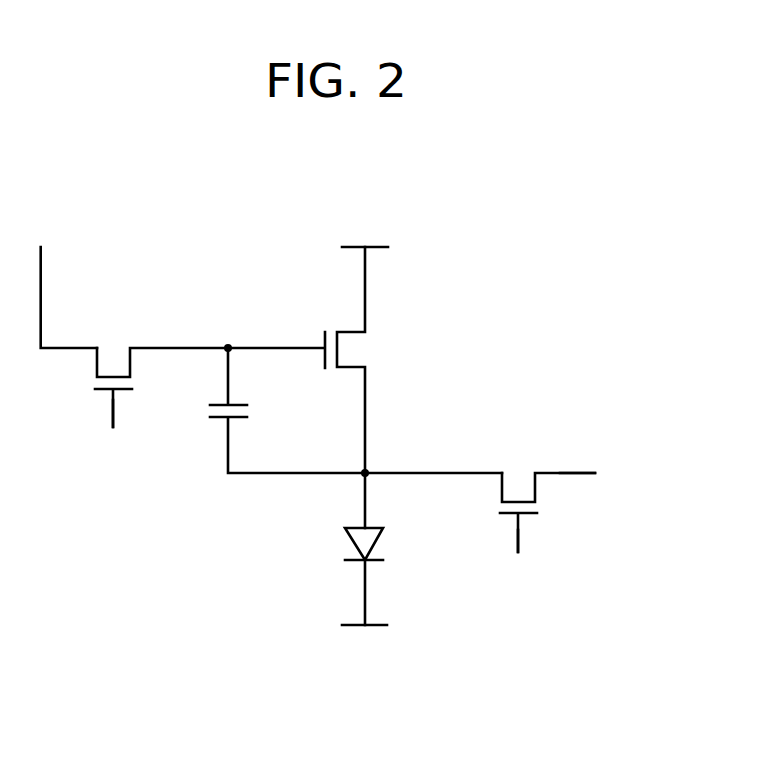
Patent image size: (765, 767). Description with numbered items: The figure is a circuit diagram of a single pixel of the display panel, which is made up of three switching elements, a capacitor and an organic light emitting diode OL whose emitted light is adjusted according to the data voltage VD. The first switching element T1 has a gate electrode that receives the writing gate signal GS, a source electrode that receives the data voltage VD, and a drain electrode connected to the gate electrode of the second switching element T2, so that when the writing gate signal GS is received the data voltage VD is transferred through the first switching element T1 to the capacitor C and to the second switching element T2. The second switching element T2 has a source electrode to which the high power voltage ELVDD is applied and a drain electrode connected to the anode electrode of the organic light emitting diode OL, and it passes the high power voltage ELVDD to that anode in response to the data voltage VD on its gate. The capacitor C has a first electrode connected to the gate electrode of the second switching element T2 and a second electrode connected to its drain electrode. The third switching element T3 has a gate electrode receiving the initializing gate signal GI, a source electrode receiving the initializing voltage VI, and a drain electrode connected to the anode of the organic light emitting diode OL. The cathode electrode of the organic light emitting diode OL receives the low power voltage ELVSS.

The data voltage VD is at (62, 281).
The first switching element T1 is at (161, 371).
The writing gate signal GS is at (114, 431).
The capacitor C is at (356, 408).
The second switching element T2 is at (309, 360).
The high power voltage ELVDD is at (365, 231).
The third switching element T3 is at (547, 496).
The initializing voltage VI is at (593, 475).
The initializing gate signal GI is at (519, 559).
The organic light emitting diode OL is at (347, 547).
The low power voltage ELVSS is at (363, 642).